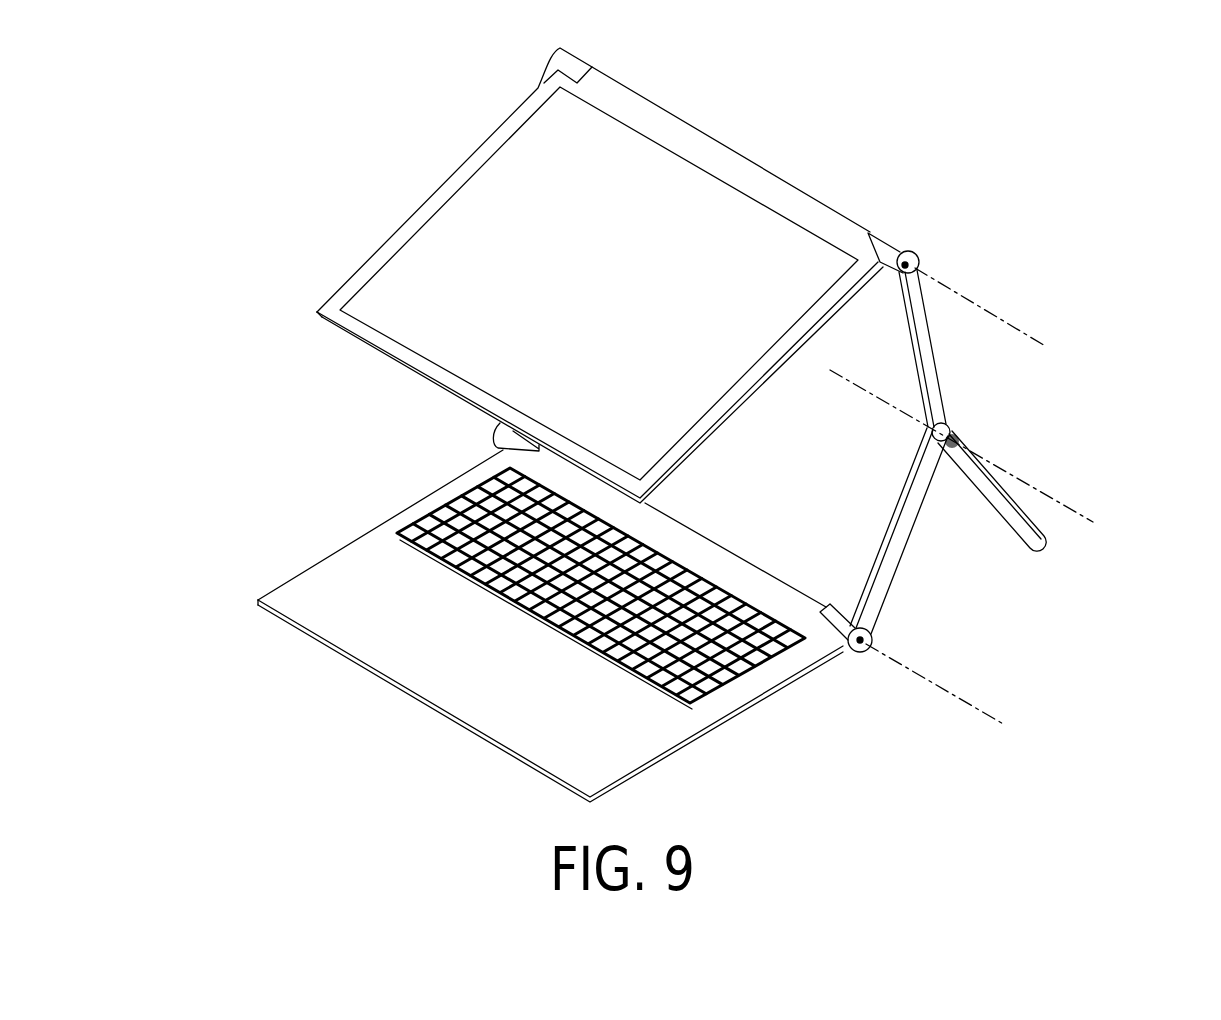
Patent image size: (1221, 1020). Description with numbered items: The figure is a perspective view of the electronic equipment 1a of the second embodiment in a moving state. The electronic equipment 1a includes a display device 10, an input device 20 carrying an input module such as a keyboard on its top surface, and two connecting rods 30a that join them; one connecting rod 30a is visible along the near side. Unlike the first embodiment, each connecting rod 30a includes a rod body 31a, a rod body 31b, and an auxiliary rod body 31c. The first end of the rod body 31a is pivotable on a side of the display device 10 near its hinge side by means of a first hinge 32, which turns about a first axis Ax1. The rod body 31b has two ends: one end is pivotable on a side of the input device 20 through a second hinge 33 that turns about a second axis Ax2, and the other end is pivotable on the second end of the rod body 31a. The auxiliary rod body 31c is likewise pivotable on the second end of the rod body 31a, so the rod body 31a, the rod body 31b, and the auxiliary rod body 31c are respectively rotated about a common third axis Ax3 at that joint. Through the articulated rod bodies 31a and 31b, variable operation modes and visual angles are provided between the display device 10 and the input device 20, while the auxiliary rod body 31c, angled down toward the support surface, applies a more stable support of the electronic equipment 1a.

The electronic equipment 1a is at (962, 68).
The display device 10 is at (436, 163).
The input device 20 is at (322, 538).
The connecting rod 30a is at (990, 407).
The rod body 31a is at (932, 330).
The rod body 31b is at (926, 538).
The auxiliary rod body 31c is at (1037, 532).
The first hinge 32 is at (884, 236).
The second hinge 33 is at (846, 612).
The first axis Ax1 is at (1017, 328).
The second axis Ax2 is at (985, 697).
The third axis Ax3 is at (1060, 502).